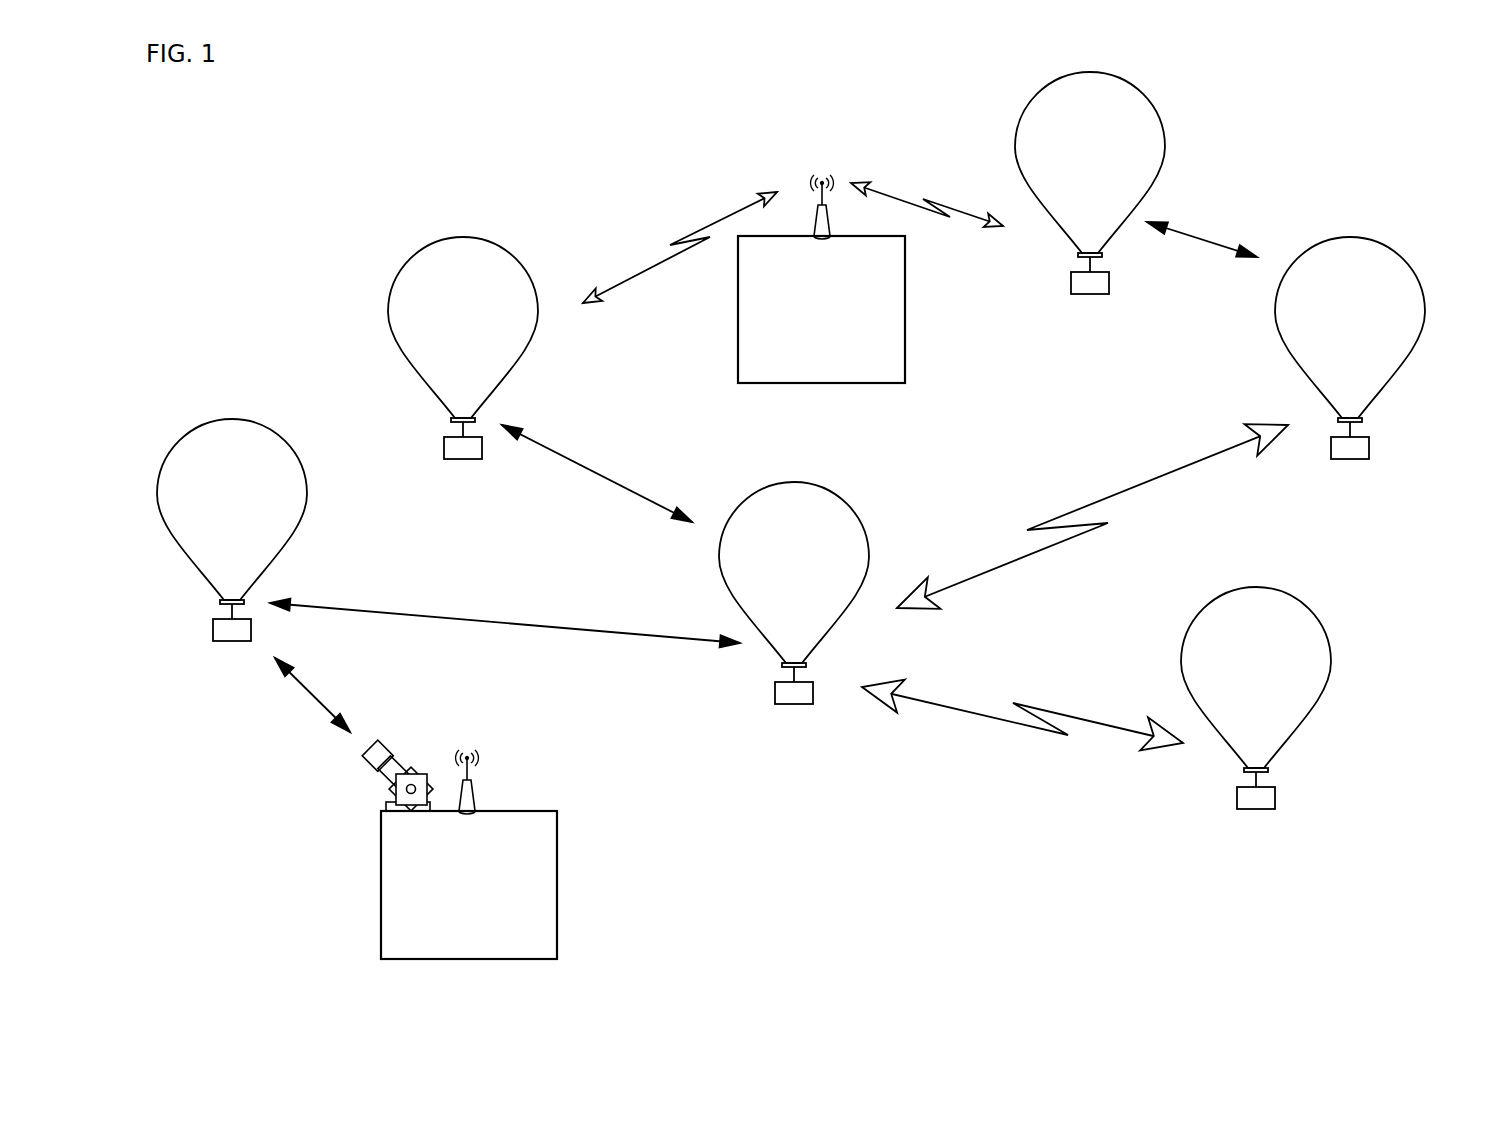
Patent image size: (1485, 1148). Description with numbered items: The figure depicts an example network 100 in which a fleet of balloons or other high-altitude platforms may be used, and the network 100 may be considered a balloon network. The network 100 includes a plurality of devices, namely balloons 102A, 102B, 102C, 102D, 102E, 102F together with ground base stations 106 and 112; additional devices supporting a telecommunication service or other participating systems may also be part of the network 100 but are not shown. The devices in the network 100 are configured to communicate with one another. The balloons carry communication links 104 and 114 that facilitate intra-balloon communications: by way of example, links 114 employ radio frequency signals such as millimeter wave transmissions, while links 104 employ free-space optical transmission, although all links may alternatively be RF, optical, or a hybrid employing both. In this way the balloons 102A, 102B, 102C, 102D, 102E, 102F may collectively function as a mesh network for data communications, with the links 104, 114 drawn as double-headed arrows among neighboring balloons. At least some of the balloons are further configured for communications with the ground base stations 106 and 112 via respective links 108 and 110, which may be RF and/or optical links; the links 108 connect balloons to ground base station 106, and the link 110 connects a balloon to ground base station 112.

The network 100 is at (226, 107).
The balloon 102A is at (434, 336).
The balloon 102B is at (1061, 165).
The balloon 102C is at (765, 567).
The balloon 102D is at (1227, 675).
The balloon 102E is at (1322, 318).
The balloon 102F is at (204, 520).
The communication link 104 is at (1199, 211).
The ground base station 106 is at (801, 348).
The link 108 is at (628, 232).
The link 110 is at (313, 691).
The ground base station 112 is at (448, 925).
The communication link 114 is at (1052, 490).